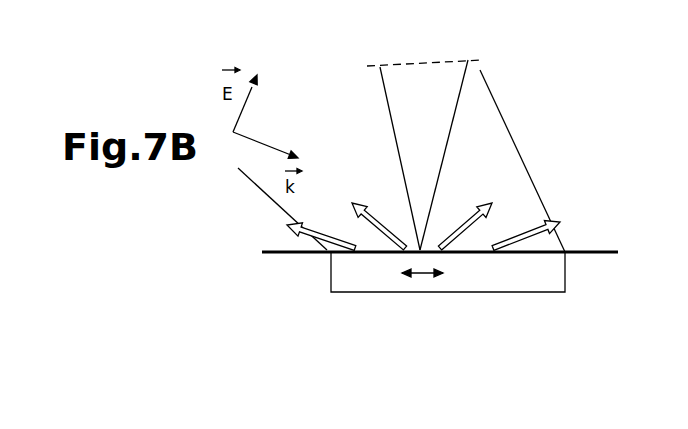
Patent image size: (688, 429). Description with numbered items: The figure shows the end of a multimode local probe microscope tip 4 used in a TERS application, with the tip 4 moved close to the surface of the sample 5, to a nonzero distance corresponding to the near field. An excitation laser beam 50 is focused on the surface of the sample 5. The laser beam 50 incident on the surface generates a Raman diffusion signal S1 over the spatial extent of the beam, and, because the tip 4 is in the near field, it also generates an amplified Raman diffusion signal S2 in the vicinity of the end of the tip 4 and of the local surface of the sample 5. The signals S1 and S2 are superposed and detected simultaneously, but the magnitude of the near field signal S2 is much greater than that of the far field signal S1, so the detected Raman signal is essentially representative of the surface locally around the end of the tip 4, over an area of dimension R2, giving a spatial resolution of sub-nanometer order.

The multimode local probe microscope tip 4 is at (402, 103).
The excitation laser beam 50 is at (485, 130).
The sample 5 is at (280, 253).
The spatial resolution of near field measurement R2 is at (422, 275).
The far field Raman diffusion signal S1 is at (330, 235).
The near field Raman diffusion signal S2 is at (390, 225).